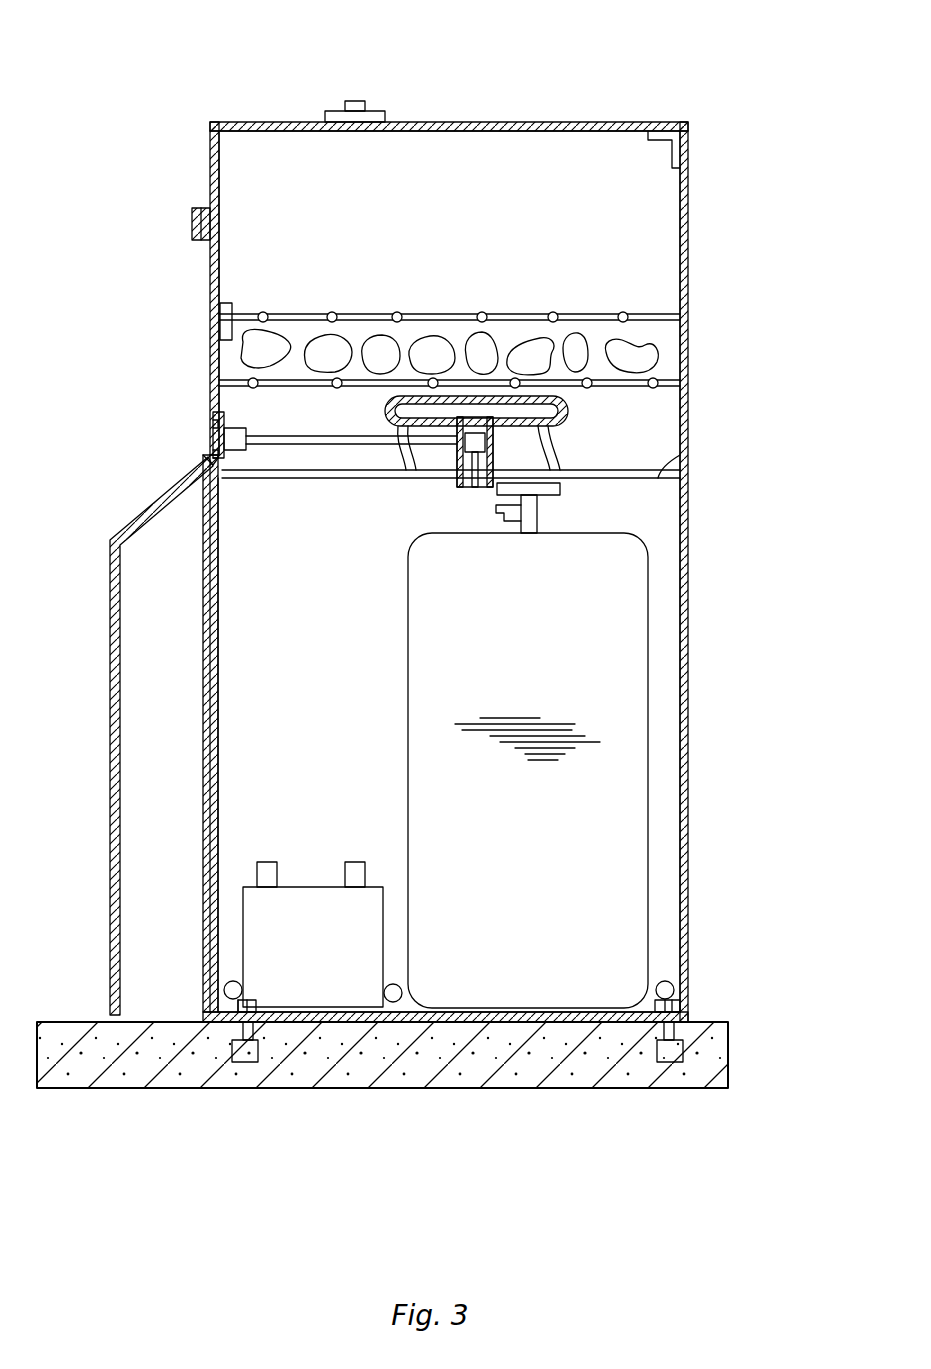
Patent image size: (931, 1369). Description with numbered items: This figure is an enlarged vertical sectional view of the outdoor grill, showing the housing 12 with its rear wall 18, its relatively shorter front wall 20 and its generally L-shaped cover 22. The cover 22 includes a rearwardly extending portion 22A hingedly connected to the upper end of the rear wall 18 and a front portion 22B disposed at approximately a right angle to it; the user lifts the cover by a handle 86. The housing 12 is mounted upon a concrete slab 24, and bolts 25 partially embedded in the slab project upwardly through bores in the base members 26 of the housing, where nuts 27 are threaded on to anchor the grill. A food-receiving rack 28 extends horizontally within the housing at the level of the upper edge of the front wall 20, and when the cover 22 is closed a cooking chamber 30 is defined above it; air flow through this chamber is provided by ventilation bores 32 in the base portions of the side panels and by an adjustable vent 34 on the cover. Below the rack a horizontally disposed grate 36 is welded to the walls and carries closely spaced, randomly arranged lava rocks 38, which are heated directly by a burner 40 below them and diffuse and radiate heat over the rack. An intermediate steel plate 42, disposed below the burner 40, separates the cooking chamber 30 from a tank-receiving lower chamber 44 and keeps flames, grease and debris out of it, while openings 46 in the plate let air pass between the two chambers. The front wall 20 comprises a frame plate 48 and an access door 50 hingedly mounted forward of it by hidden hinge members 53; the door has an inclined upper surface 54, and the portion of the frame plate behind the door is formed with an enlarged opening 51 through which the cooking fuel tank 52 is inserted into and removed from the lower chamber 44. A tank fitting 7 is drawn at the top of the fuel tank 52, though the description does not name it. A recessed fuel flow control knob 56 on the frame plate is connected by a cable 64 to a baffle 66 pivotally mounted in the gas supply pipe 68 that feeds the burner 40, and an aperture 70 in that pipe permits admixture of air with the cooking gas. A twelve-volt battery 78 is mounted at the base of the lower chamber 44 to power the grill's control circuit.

The tank valve 7 is at (538, 524).
The housing 12 is at (672, 352).
The rear wall 18 is at (690, 633).
The front wall 20 is at (210, 395).
The cover 22 is at (215, 122).
The rearwardly extending portion 22A is at (580, 122).
The front portion 22B is at (210, 290).
The concrete slab 24 is at (730, 1066).
The bolts 25 is at (248, 1062).
The base members 26 is at (526, 1002).
The nuts 27 is at (260, 1022).
The food-receiving rack 28 is at (602, 316).
The cooking chamber 30 is at (440, 212).
The ventilation bores 32 is at (672, 985).
The adjustable vent 34 is at (354, 100).
The grate 36 is at (668, 356).
The lava rocks 38 is at (470, 350).
The burner 40 is at (688, 408).
The intermediate steel plate 42 is at (638, 480).
The tank-receiving lower chamber 44 is at (285, 605).
The openings 46 is at (688, 452).
The frame plate 48 is at (210, 355).
The access door 50 is at (110, 650).
The enlarged opening 51 is at (222, 722).
The cooking fuel tank 52 is at (618, 832).
The hidden hinge members 53 is at (203, 790).
The inclined upper surface 54 is at (152, 500).
The fuel flow control knob 56 is at (214, 438).
The cable 64 is at (313, 446).
The baffle 66 is at (475, 487).
The gas supply pipe 68 is at (456, 446).
The aperture 70 is at (512, 452).
The battery 78 is at (240, 320).
The handle 86 is at (192, 222).